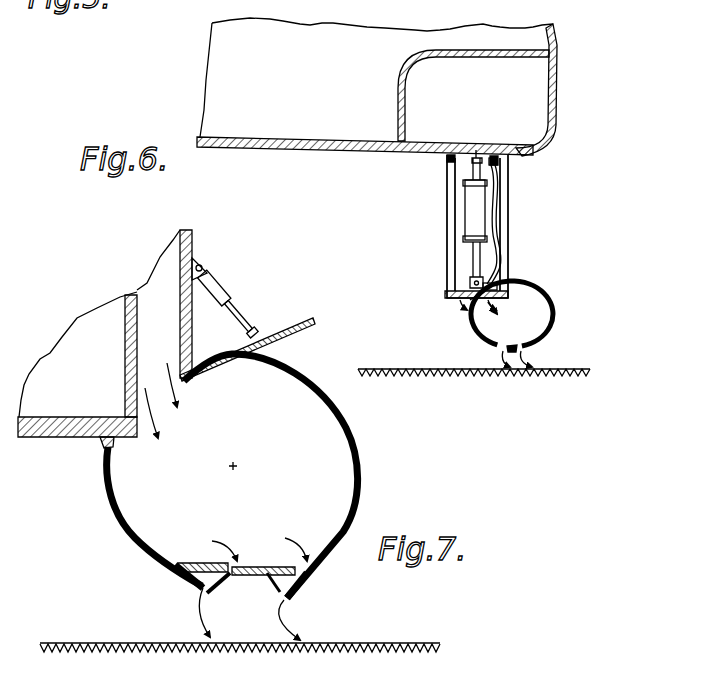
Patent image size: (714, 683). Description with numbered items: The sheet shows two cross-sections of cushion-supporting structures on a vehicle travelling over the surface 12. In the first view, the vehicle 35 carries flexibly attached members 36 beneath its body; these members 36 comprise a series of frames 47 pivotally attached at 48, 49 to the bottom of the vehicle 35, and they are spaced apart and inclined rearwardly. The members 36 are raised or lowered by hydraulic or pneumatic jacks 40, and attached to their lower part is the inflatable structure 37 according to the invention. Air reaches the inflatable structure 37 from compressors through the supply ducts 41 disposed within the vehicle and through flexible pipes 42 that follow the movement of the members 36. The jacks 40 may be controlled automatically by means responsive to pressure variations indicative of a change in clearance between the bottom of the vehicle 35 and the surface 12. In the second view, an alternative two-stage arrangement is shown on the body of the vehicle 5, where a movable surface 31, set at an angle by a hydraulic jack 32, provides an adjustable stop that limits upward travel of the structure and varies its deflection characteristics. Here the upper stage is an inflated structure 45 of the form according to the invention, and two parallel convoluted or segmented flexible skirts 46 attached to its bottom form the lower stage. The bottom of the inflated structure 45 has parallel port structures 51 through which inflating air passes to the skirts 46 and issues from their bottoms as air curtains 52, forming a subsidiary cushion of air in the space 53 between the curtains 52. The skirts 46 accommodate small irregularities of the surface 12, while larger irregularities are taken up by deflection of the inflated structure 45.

In FIG. 7, the vehicle body 5 is at (84, 384).
In FIG. 6, the surface 12 is at (435, 367).
In FIG. 7, the surface 12 is at (110, 642).
In FIG. 7, the movable surface 31 is at (300, 322).
In FIG. 7, the hydraulic jack 32 is at (222, 292).
In FIG. 6, the vehicle 35 is at (548, 46).
In FIG. 6, the flexibly attached members 36 is at (440, 247).
In FIG. 6, the inflatable structure 37 is at (530, 292).
In FIG. 6, the hydraulic jacks 40 is at (470, 211).
In FIG. 6, the supply ducts 41 is at (530, 106).
In FIG. 6, the flexible pipes 42 is at (498, 226).
In FIG. 7, the inflated structure 45 is at (352, 461).
In FIG. 7, the flexible skirts 46 is at (198, 577).
In FIG. 6, the frames 47 is at (446, 186).
In FIG. 6, the pivotal attachment 48 is at (500, 167).
In FIG. 6, the pivotal attachment 49 is at (447, 158).
In FIG. 7, the port structures 51 is at (247, 543).
In FIG. 7, the air curtains 52 is at (194, 610).
In FIG. 7, the space 53 is at (256, 609).